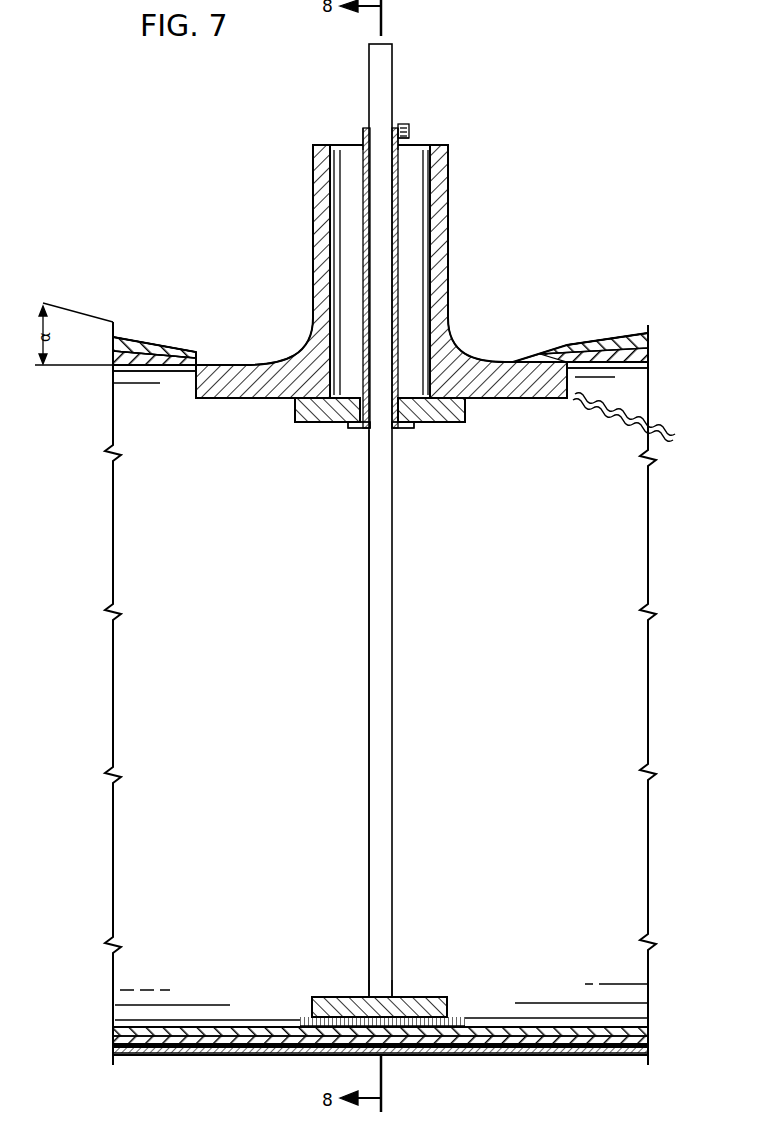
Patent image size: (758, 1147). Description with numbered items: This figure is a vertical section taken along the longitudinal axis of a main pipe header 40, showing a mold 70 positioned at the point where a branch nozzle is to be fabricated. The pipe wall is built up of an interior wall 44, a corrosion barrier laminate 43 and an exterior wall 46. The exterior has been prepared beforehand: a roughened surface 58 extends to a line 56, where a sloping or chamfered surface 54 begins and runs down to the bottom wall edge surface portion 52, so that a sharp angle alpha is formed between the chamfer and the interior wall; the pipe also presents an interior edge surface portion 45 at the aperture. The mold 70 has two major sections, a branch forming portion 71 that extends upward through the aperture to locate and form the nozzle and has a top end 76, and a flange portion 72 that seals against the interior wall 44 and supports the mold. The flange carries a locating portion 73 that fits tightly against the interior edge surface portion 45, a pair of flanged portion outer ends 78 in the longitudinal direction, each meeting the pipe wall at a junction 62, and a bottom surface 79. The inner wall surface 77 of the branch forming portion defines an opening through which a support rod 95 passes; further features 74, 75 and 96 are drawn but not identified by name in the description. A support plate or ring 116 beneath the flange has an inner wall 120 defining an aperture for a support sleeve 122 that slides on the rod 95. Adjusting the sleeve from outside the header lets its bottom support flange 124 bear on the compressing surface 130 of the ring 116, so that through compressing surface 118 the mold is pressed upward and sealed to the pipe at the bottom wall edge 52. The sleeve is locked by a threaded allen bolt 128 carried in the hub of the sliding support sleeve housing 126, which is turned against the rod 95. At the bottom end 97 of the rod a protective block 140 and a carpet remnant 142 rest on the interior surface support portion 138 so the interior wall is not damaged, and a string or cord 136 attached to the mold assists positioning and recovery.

The main pipe header 40 is at (637, 328).
The corrosion barrier laminate 43 is at (128, 336).
The interior wall 44 is at (136, 333).
The interior edge surface portion 45 is at (546, 398).
The exterior wall 46 is at (148, 338).
The bottom wall edge surface portion 52 is at (488, 348).
The sloping surface 54 is at (542, 352).
The line 56 is at (592, 340).
The roughened surface 58 is at (155, 342).
The junction 62 is at (188, 372).
The mold 70 is at (302, 202).
The branch forming portion 71 is at (320, 222).
The flange portion 72 is at (240, 402).
The locating portion 73 is at (312, 352).
The inner wall surface 74 is at (336, 305).
The bore 75 is at (336, 254).
The top end 76 is at (326, 146).
The inner wall surface 77 is at (343, 262).
The flanged portion outer ends 78 is at (580, 372).
The bottom surface 79 is at (262, 402).
The support rod 95 is at (390, 582).
The upper end of rod 96 is at (385, 47).
The bottom end 97 is at (375, 988).
The support plate or ring 116 is at (462, 424).
The compressing surface 118 is at (468, 405).
The inner wall 120 is at (382, 430).
The support sleeve 122 is at (365, 138).
The bottom support flange 124 is at (388, 424).
The sliding support sleeve housing 126 is at (404, 126).
The threaded allen bolt 128 is at (408, 134).
The compressing surface 130 is at (340, 427).
The string or cord 136 is at (612, 420).
The interior surface support portion 138 is at (503, 1026).
The protective block 140 is at (446, 998).
The carpet remnant 142 is at (464, 1018).